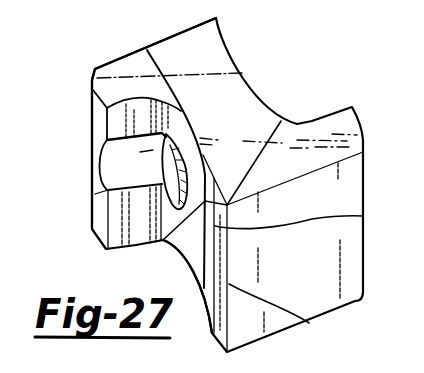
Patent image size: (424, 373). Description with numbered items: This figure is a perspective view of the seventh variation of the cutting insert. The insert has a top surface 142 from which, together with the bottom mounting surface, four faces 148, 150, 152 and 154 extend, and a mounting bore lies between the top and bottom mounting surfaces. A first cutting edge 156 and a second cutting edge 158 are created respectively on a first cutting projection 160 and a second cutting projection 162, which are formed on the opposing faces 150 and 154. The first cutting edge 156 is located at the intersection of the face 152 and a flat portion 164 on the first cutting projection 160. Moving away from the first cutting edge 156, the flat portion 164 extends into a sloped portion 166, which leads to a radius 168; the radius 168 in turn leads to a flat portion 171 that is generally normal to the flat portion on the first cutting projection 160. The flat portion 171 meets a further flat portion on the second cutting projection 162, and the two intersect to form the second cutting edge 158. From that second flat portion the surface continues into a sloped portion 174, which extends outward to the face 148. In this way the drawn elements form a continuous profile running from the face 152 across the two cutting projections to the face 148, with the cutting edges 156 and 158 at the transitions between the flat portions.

The face 150 is at (319, 50).
The top surface 142 is at (224, 110).
The face 148 is at (216, 18).
The radius 168 is at (147, 50).
The sloped portion 174 is at (92, 81).
The second cutting projection 162 is at (100, 106).
The second cutting edge 158 is at (104, 118).
The flat portion 171 is at (123, 125).
The first cutting projection 160 is at (281, 121).
The face 152 is at (327, 201).
The flat portion 164 is at (363, 216).
The first cutting edge 156 is at (309, 323).
The sloped portion 166 is at (163, 241).
The face 154 is at (173, 267).